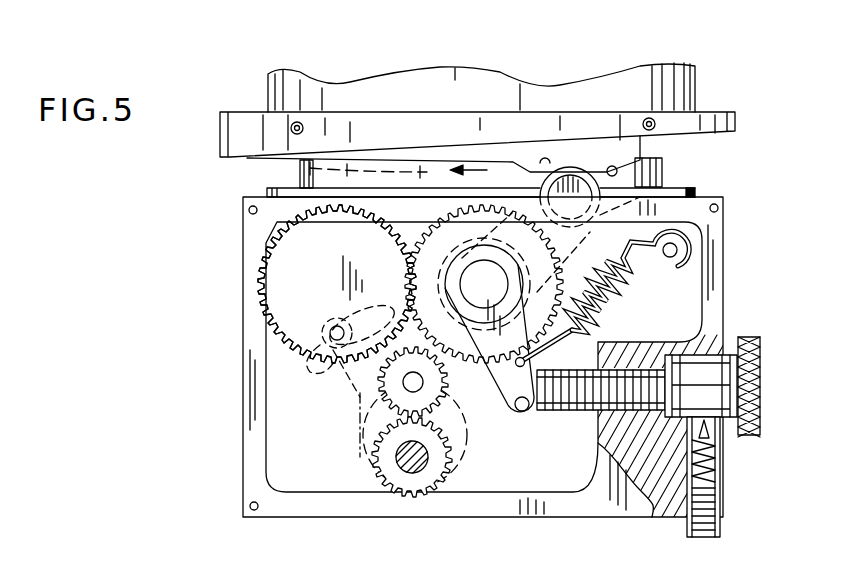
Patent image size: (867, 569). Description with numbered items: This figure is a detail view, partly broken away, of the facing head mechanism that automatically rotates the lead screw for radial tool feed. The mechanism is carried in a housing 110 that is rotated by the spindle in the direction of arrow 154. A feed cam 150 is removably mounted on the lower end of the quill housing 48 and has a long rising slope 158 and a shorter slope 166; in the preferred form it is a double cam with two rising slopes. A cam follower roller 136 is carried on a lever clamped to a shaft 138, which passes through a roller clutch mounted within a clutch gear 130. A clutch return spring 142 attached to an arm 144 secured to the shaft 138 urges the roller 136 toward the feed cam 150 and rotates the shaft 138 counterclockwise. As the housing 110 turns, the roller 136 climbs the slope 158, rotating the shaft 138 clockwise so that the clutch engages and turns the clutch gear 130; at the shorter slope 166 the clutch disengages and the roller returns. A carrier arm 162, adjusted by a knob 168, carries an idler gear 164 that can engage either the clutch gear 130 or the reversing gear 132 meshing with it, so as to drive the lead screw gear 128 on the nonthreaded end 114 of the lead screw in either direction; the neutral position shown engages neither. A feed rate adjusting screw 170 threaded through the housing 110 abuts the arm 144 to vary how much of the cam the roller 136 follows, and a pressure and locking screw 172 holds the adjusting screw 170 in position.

The quill housing 48 is at (697, 76).
The housing 110 is at (243, 344).
The forward nonthreaded end of lead screw 114 is at (405, 456).
The lead screw gear 128 is at (450, 477).
The clutch gear 130 is at (400, 258).
The reversing gear 132 is at (332, 266).
The cam follower roller 136 is at (543, 162).
The shaft 138 is at (500, 300).
The clutch return spring 142 is at (627, 310).
The arm 144 is at (496, 392).
The feed cam 150 is at (220, 133).
The arrow 154 is at (500, 143).
The long rising slope 158 is at (607, 165).
The carrier arm 162 is at (360, 445).
The idler gear 164 is at (387, 397).
The shorter slope 166 is at (487, 168).
The knob 168 is at (323, 330).
The feed rate adjusting screw 170 is at (762, 383).
The pressure and locking screw 172 is at (718, 527).